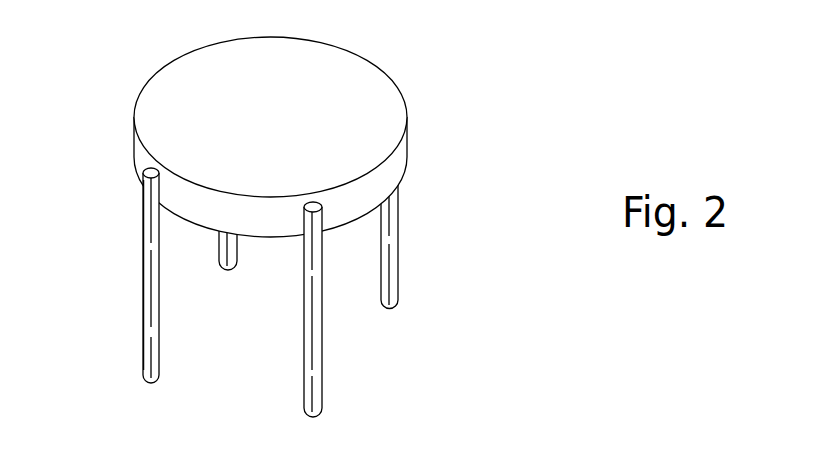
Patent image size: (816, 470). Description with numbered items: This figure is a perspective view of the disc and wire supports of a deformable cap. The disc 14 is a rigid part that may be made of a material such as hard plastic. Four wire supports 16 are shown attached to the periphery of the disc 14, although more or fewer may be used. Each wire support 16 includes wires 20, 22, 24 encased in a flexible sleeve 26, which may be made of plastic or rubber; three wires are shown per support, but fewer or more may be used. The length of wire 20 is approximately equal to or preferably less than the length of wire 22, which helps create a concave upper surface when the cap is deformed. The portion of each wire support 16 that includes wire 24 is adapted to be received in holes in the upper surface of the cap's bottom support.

The disc 14 is at (327, 83).
The wire support 16 is at (224, 227).
The wire 20 is at (150, 207).
The wire 22 is at (148, 287).
The wire 24 is at (148, 358).
The flexible sleeve 26 is at (148, 237).